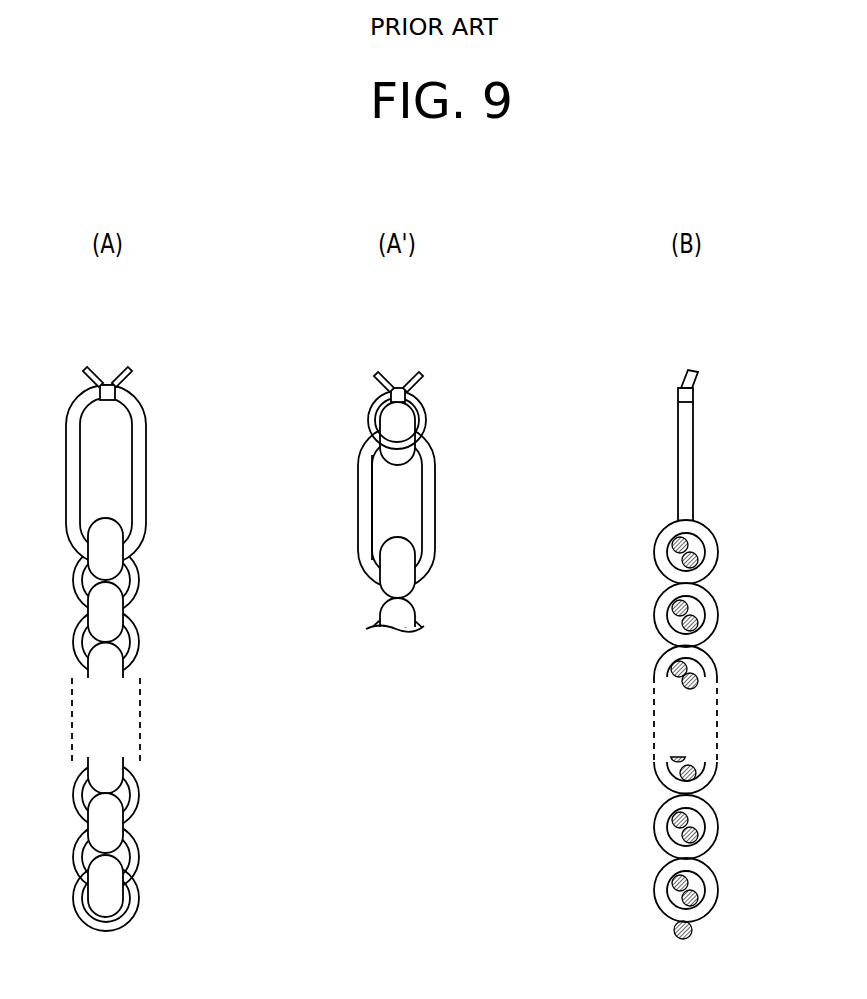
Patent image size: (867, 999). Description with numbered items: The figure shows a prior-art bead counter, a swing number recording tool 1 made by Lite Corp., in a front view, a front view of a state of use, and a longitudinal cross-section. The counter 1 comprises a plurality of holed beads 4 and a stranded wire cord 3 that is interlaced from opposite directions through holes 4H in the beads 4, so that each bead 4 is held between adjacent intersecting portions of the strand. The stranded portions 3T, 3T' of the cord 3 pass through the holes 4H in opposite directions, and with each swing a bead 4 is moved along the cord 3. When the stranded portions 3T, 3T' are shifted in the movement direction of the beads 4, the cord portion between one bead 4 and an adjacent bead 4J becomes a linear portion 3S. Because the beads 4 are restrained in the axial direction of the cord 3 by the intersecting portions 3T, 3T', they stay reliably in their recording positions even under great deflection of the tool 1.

The counter 1 is at (174, 374).
The stranded wire cord 3 is at (142, 453).
The linear portion 3S is at (367, 497).
The stranded portion 3T is at (150, 578).
The stranded portion 3T' is at (153, 635).
The holed bead 4 is at (110, 530).
The adjacent bead 4J is at (110, 632).
The hole 4H is at (675, 623).